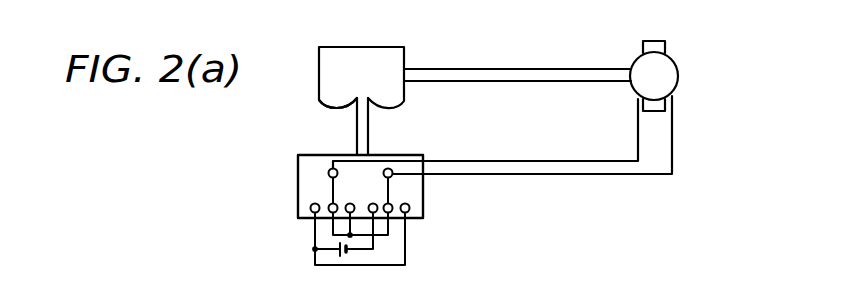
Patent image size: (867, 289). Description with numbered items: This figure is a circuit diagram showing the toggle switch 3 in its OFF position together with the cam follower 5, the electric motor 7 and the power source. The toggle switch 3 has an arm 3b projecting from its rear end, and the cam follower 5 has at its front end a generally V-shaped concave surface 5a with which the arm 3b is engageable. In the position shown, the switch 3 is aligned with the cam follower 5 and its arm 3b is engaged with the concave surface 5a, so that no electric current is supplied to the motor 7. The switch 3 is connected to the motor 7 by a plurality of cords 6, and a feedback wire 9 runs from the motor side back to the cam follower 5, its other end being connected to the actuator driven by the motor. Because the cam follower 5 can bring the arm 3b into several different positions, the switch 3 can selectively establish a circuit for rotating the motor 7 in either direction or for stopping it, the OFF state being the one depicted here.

The toggle switch 3 is at (298, 175).
The arm 3b is at (369, 140).
The cam follower 5 is at (389, 46).
The concave surface 5a is at (350, 98).
The cords 6 is at (562, 162).
The electric motor 7 is at (676, 65).
The feedback wire 9 is at (530, 68).